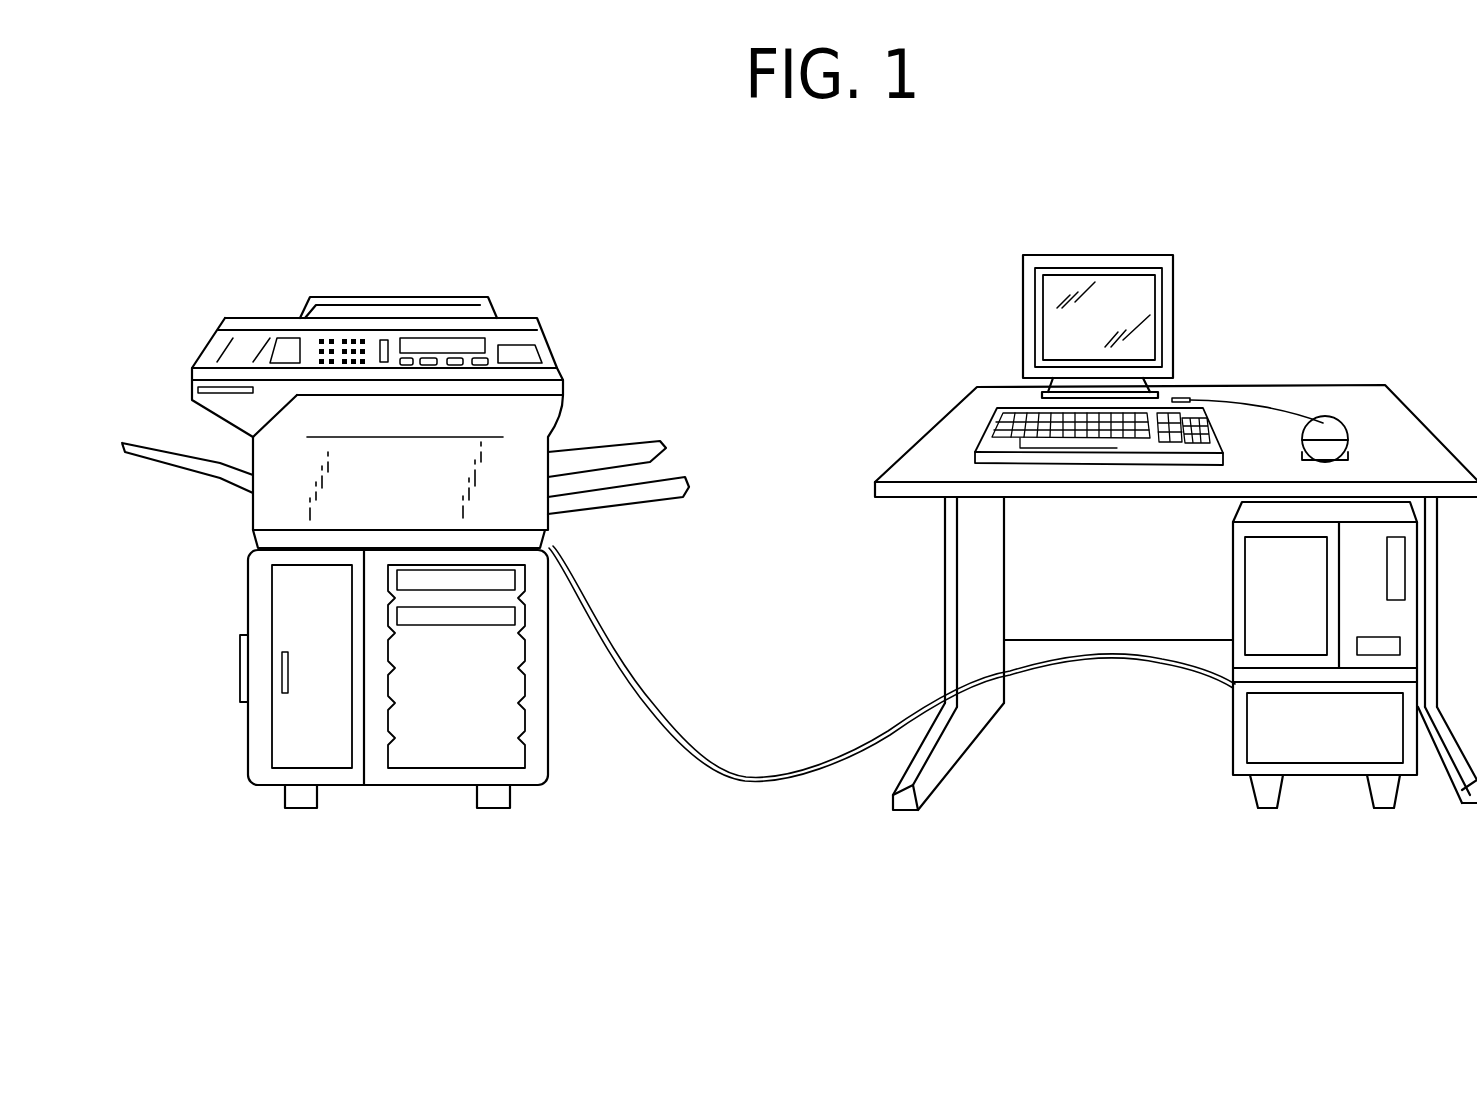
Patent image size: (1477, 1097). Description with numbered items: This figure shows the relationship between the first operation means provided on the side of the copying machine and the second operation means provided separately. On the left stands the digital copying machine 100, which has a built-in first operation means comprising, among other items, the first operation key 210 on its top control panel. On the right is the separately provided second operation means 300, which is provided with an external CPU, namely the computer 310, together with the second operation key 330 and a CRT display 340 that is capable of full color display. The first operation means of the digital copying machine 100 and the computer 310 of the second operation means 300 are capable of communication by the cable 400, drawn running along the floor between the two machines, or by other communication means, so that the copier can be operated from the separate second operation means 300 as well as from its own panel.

The digital copying machine 100 is at (456, 276).
The first operation key 210 is at (540, 352).
The second operation means 300 is at (1134, 722).
The external CPU (2) (computer) 310 is at (1233, 587).
The second operation key 330 is at (1000, 415).
The CRT display 340 is at (1137, 302).
The cable 400 is at (732, 772).